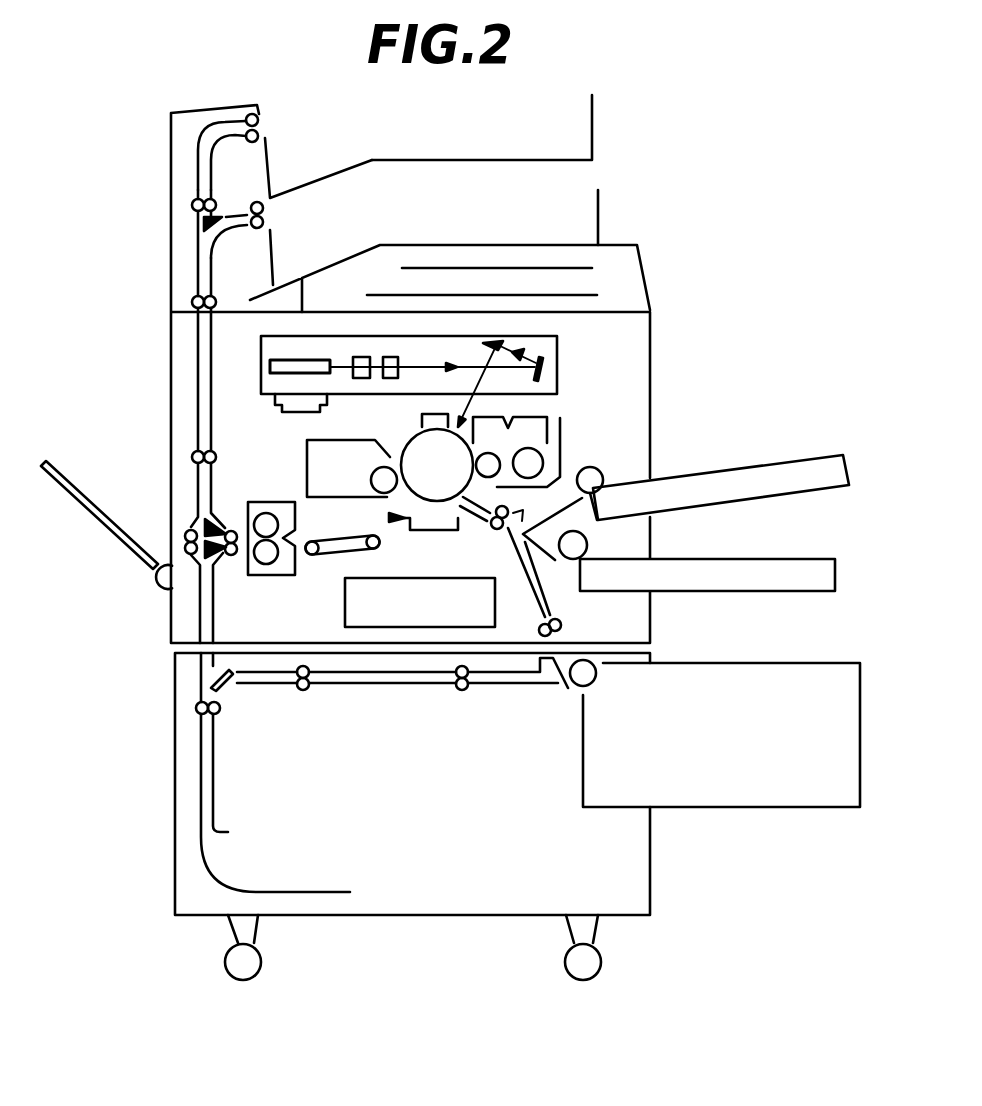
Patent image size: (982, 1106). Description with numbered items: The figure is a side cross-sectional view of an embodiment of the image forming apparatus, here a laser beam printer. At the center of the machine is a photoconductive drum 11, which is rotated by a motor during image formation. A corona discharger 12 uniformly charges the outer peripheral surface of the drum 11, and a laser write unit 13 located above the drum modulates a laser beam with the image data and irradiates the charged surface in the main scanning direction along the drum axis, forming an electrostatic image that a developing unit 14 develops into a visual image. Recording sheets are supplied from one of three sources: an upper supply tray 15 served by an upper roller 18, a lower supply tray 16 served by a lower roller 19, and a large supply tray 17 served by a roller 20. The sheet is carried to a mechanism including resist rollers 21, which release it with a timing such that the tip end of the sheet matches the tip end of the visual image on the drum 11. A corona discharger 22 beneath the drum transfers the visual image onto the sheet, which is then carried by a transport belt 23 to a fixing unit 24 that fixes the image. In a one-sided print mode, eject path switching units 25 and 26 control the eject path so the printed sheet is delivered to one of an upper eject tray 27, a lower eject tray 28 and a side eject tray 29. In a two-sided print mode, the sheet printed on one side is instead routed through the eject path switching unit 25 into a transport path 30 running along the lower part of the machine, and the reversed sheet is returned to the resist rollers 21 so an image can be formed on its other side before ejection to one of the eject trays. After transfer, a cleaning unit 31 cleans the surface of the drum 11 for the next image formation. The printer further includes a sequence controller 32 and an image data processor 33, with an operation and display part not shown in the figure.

The photoconductive drum 11 is at (417, 497).
The corona discharger 12 is at (422, 424).
The laser write unit 13 is at (562, 349).
The developing unit 14 is at (560, 418).
The upper supply tray 15 is at (767, 470).
The lower supply tray 16 is at (767, 570).
The large supply tray 17 is at (727, 675).
The upper roller 18 is at (598, 468).
The lower roller 19 is at (587, 545).
The roller 20 is at (592, 683).
The resist rollers 21 is at (494, 531).
The corona discharger 22 is at (437, 530).
The transport belt 23 is at (343, 553).
The fixing unit 24 is at (270, 575).
The eject path switching unit 25 is at (210, 522).
The eject path switching unit 26 is at (205, 224).
The upper eject tray 27 is at (592, 136).
The lower eject tray 28 is at (598, 221).
The side eject tray 29 is at (78, 490).
The transport path 30 is at (393, 684).
The cleaning unit 31 is at (307, 460).
The sequence controller 32 is at (592, 268).
The image data processor 33 is at (597, 295).